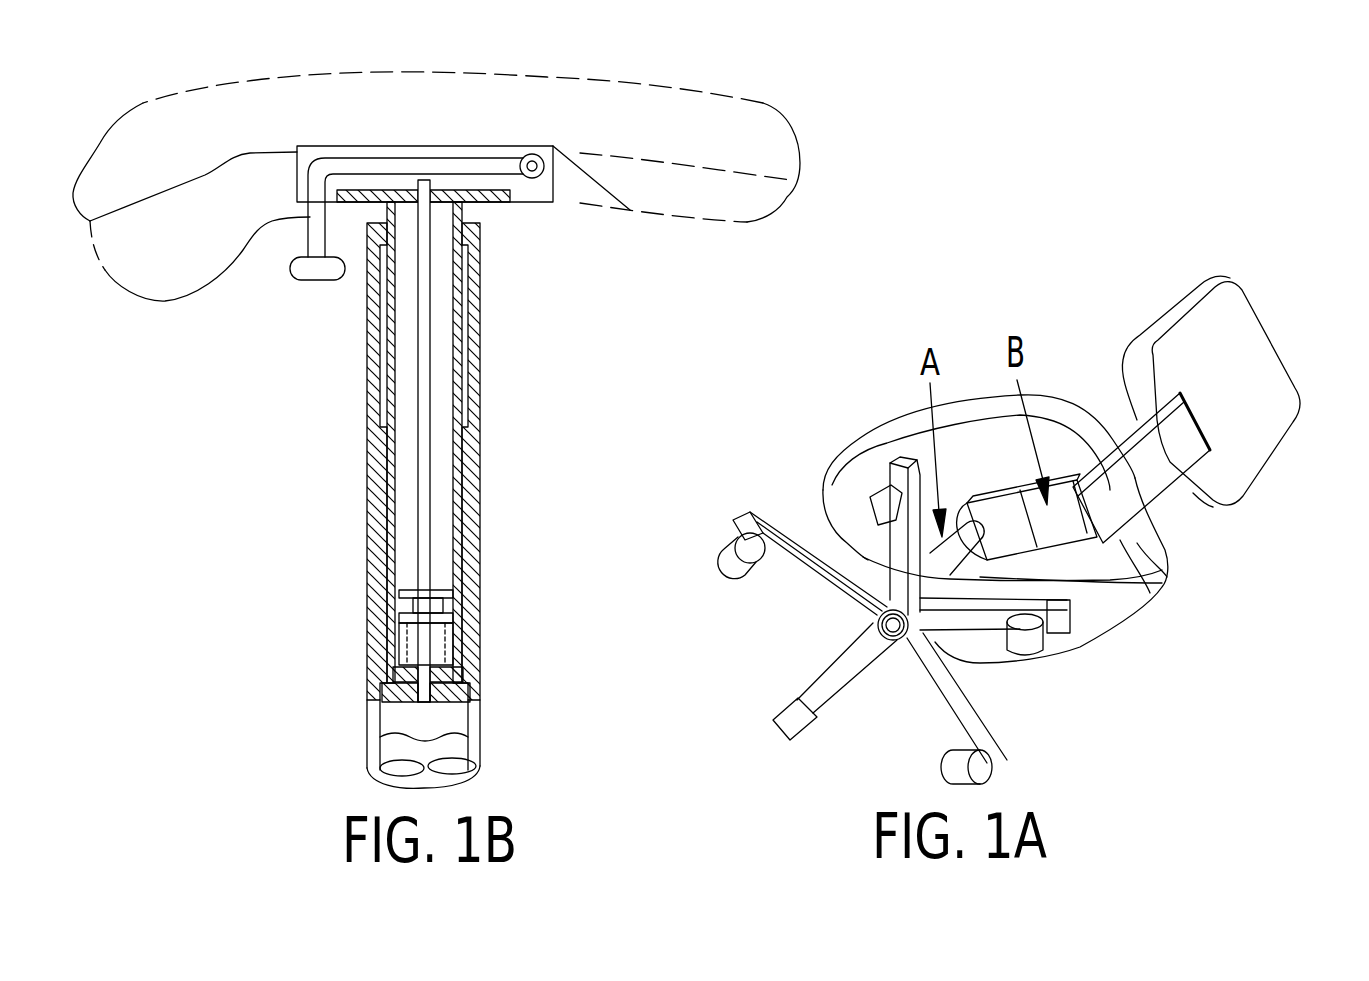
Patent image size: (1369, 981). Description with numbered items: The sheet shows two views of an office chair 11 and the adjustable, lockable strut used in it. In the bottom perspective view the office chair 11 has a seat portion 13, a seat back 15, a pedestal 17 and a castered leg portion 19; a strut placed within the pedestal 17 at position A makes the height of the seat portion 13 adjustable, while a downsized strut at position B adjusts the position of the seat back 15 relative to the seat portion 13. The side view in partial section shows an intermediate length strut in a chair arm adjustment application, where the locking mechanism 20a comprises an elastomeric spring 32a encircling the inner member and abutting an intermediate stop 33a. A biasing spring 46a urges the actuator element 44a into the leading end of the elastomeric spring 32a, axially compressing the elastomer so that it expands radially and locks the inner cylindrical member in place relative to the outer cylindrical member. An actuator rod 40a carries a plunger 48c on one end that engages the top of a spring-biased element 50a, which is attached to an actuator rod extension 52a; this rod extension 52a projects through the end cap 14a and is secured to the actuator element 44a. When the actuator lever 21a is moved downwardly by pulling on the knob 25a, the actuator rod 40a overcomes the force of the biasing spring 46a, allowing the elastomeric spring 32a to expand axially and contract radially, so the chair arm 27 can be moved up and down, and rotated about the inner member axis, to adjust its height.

In FIG. 1A, the office chair 11 is at (1082, 662).
In FIG. 1A, the seat portion 13 is at (1110, 607).
In FIG. 1A, the seat back 15 is at (1247, 367).
In FIG. 1A, the pedestal 17 is at (1148, 570).
In FIG. 1A, the castered leg portion 19 is at (837, 583).
In FIG. 1B, the chair arm 27 is at (240, 100).
In FIG. 1B, the actuator lever 21a is at (467, 157).
In FIG. 1B, the knob 25a is at (300, 270).
In FIG. 1B, the actuator rod 40a is at (425, 326).
In FIG. 1B, the intermediate stop 33a is at (470, 413).
In FIG. 1B, the elastomeric spring 32a is at (478, 535).
In FIG. 1B, the valve flange 48c is at (410, 588).
In FIG. 1B, the spring-biased element 50a is at (445, 605).
In FIG. 1B, the biasing spring 46a is at (455, 650).
In FIG. 1B, the end cap 14a is at (470, 680).
In FIG. 1B, the actuator element 44a is at (382, 700).
In FIG. 1B, the actuator rod extension 52a is at (424, 698).
In FIG. 1B, the locking mechanism 20a is at (495, 690).